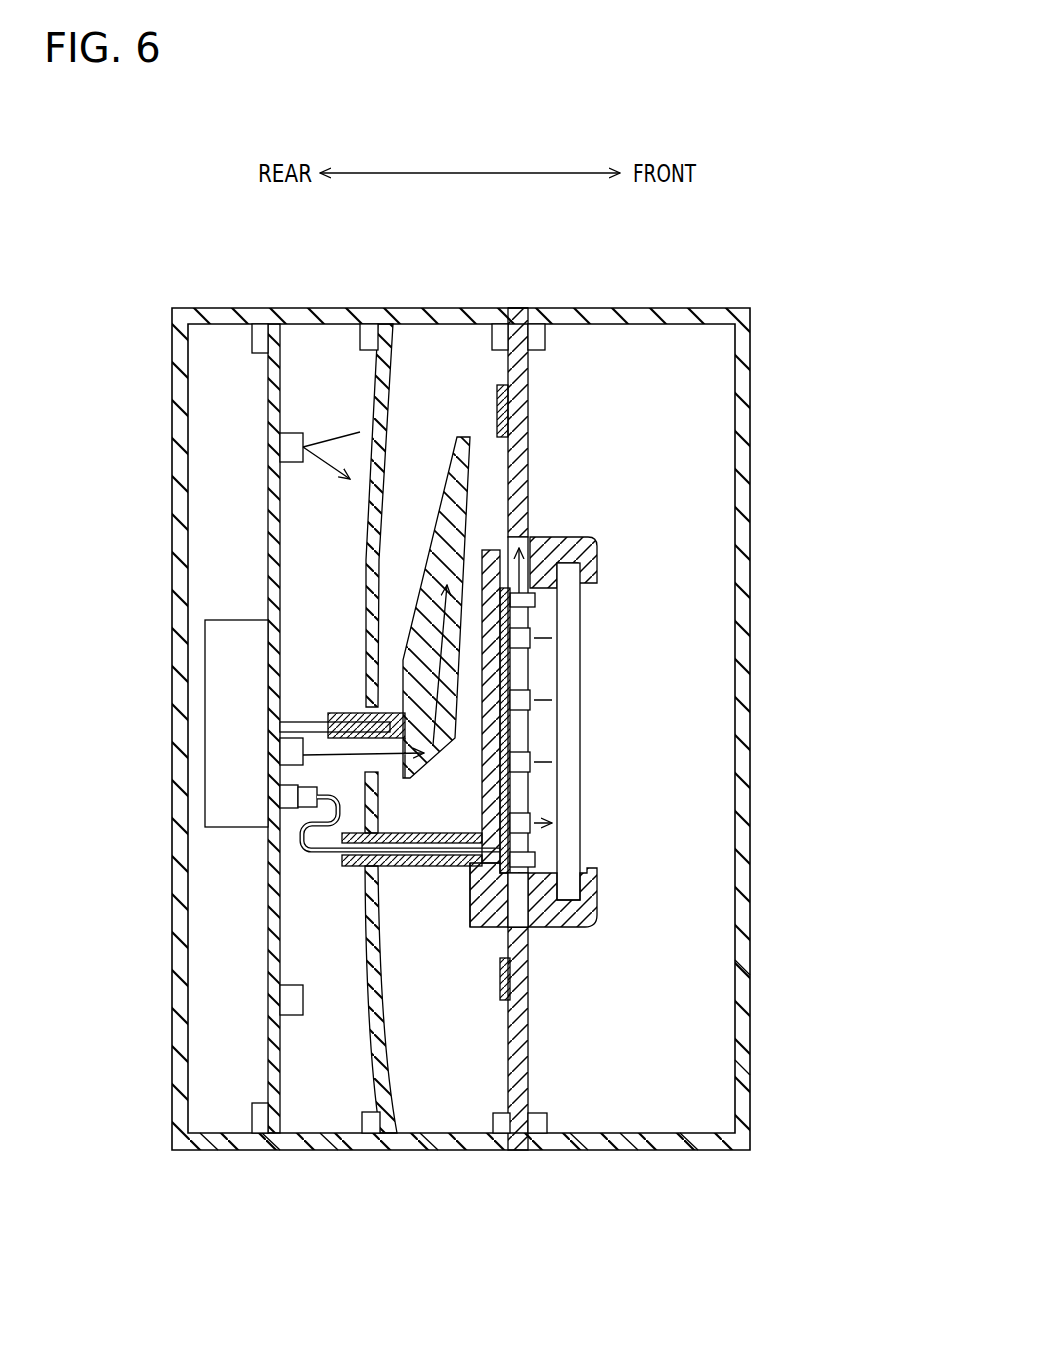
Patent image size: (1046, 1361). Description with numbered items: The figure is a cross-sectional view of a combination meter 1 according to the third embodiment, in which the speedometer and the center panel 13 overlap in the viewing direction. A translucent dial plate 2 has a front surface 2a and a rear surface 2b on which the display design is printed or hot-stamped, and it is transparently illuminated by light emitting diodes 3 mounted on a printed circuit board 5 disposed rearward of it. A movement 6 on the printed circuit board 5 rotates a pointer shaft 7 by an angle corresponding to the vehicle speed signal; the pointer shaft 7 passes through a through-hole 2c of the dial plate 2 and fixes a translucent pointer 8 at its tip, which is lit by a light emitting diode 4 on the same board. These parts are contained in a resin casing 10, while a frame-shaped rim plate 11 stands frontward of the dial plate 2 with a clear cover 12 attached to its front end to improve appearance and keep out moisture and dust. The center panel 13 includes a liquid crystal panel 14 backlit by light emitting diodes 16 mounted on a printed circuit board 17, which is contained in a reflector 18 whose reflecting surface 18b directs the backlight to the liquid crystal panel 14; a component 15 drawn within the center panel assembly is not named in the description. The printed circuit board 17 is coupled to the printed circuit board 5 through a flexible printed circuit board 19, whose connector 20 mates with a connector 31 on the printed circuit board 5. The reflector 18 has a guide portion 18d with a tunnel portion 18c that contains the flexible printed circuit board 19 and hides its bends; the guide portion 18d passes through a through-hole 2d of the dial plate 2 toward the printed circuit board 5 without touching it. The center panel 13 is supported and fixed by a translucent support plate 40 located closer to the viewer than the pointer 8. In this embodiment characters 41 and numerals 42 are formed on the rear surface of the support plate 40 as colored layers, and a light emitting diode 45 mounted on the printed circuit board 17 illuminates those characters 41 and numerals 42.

The combination meter 1 is at (106, 146).
The dial plate 2 is at (384, 434).
The front surface 2a is at (383, 398).
The rear surface 2b is at (372, 395).
The through-hole 2c is at (293, 797).
The through-hole 2d is at (342, 861).
The light emitting diodes 3 is at (293, 432).
The light emitting diode 4 is at (293, 753).
The printed circuit board 5 is at (282, 393).
The movement 6 is at (205, 633).
The pointer shaft 7 is at (305, 722).
The pointer 8 is at (497, 410).
The casing 10 is at (357, 1152).
The rim plate 11 is at (710, 1153).
The clear cover 12 is at (752, 1100).
The center panel 13 is at (688, 718).
The liquid crystal panel 14 is at (584, 647).
The board holder 15 is at (597, 557).
The light emitting diodes 16 is at (510, 712).
The printed circuit board 17 is at (510, 673).
The reflector 18 is at (558, 541).
The reflecting surface 18b is at (536, 865).
The tunnel portion 18c is at (472, 830).
The guide portion 18d is at (482, 783).
The flexible printed circuit board 19 is at (342, 847).
The connector 20 is at (304, 830).
The connector 31 is at (310, 803).
The support plate 40 is at (532, 397).
The characters 41 is at (527, 308).
The numerals 42 is at (500, 982).
The light emitting diode 45 is at (535, 600).